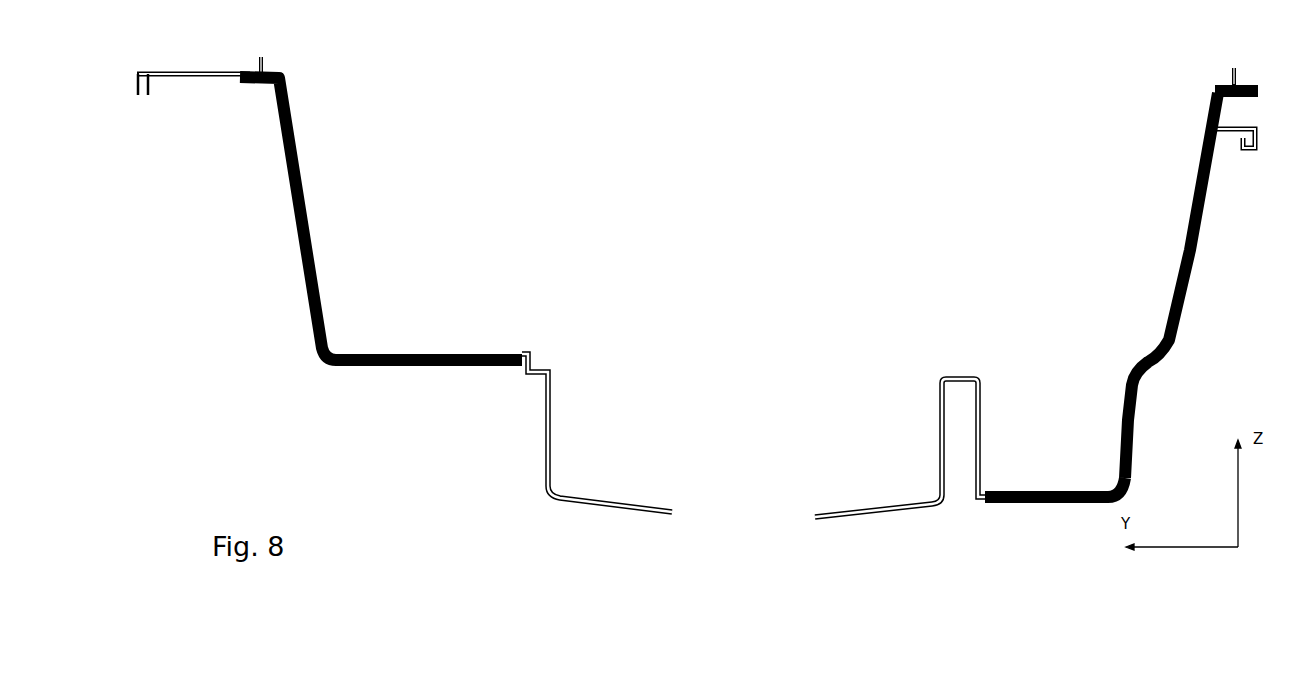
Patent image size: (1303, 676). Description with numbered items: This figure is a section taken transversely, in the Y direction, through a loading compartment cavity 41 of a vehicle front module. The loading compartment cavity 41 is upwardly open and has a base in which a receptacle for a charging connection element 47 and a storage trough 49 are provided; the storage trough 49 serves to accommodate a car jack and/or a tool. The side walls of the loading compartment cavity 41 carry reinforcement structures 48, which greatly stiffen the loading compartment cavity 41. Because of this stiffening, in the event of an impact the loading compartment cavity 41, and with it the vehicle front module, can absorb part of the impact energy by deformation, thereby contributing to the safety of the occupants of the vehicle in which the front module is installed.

The loading compartment cavity 41 is at (697, 287).
The receptacle for a charging connection element 47 is at (652, 452).
The reinforcement structures 48 is at (318, 280).
The storage trough 49 is at (1062, 457).